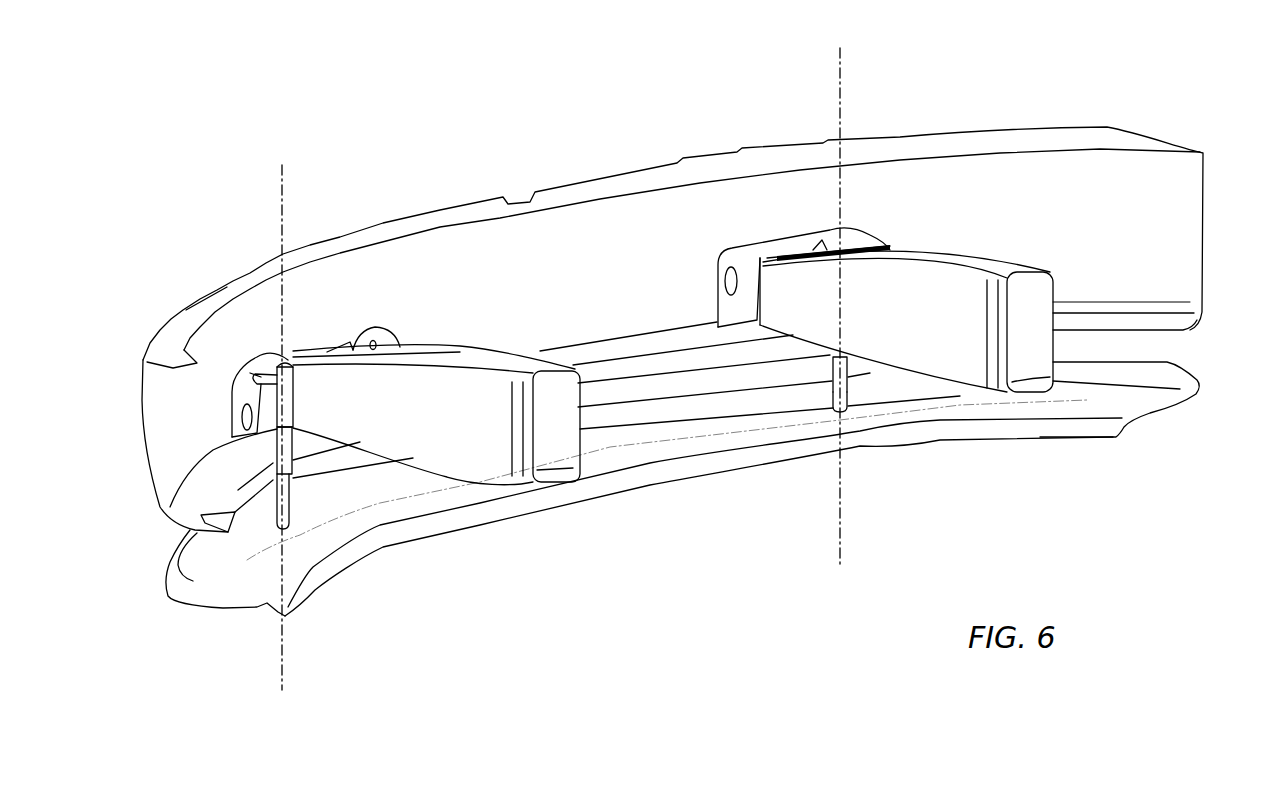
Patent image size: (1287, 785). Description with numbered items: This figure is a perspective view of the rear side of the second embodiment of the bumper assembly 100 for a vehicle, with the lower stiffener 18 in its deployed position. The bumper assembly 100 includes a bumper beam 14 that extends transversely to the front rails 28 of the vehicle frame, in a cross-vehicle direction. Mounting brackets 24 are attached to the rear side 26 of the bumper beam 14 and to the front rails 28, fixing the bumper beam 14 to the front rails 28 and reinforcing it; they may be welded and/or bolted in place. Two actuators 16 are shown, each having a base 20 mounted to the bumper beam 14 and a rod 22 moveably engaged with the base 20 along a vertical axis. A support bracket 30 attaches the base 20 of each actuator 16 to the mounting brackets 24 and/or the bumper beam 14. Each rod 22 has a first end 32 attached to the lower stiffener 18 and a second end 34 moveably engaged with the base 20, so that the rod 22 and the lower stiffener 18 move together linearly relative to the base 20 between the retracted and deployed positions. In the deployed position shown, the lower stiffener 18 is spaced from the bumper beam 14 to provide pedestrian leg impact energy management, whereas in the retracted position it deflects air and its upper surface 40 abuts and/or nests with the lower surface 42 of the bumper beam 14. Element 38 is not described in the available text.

The bumper assembly 100 is at (175, 249).
The bumper beam 14 is at (1207, 210).
The actuator 16 is at (264, 452).
The lower stiffener 18 is at (617, 490).
The base 20 is at (275, 430).
The rod 22 is at (293, 487).
The mounting bracket 24 is at (380, 326).
The rear side 26 is at (160, 394).
The front rail 28 is at (473, 350).
The support bracket 30 is at (272, 398).
The first end 32 is at (281, 532).
The second end 34 is at (280, 364).
The lower flange 38 is at (1184, 337).
The upper surface 40 is at (1179, 362).
The lower surface 42 is at (163, 527).